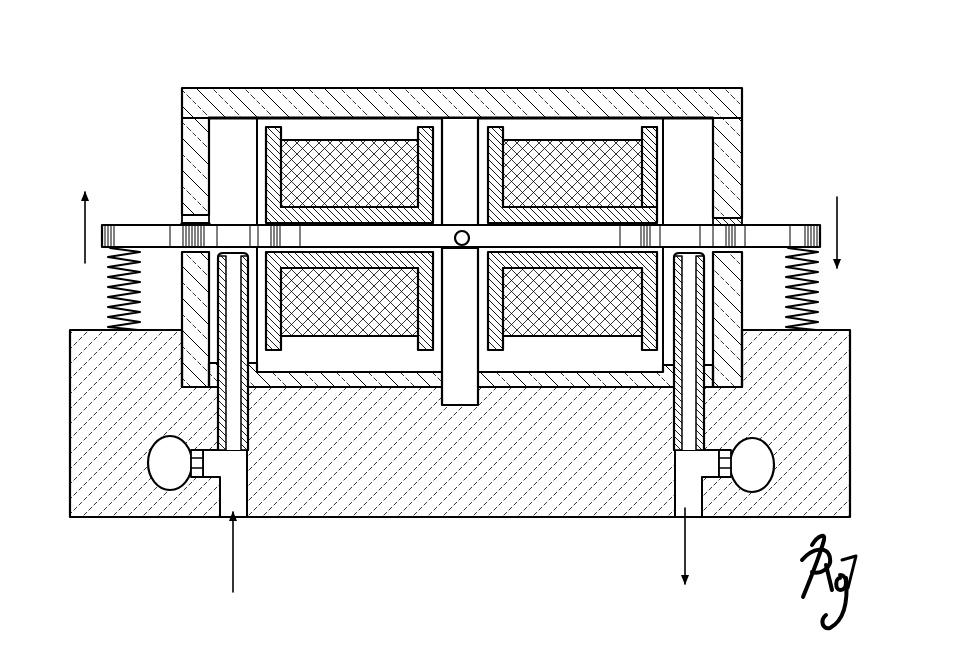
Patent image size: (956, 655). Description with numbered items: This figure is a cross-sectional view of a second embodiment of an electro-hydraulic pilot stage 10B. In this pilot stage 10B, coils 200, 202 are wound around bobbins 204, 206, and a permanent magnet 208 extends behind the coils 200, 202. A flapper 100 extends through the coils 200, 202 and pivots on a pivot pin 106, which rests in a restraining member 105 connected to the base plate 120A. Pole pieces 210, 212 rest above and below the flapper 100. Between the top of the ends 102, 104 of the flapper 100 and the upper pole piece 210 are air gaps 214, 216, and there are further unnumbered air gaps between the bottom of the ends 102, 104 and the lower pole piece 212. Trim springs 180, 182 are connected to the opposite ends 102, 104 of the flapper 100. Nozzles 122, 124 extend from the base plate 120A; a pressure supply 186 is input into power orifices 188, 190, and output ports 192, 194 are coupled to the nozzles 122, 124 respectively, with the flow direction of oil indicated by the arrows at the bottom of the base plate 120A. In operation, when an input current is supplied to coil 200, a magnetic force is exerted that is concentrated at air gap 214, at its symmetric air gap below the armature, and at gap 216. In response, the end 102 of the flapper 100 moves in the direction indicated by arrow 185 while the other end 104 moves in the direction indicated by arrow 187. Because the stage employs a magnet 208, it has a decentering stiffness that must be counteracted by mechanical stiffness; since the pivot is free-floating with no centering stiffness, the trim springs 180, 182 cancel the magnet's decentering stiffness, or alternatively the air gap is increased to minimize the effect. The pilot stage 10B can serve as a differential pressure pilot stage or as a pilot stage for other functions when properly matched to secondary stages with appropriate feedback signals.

The pilot stage 10B is at (500, 202).
The pole piece 210 is at (202, 87).
The air gap 214 is at (182, 221).
The flapper 100 is at (148, 224).
The end of flapper 102 is at (113, 225).
The end of flapper 104 is at (810, 242).
The pivot pin 106 is at (462, 230).
The restraining member 105 is at (457, 396).
The nozzle 122 is at (223, 256).
The nozzle 124 is at (697, 255).
The trim spring 180 is at (110, 312).
The trim spring 182 is at (813, 273).
The arrow 185 is at (85, 195).
The arrow 187 is at (837, 200).
The pressure supply 186 is at (200, 478).
The power orifice 188 is at (167, 480).
The power orifice 190 is at (726, 478).
The output port 192 is at (242, 502).
The output port 194 is at (668, 518).
The base plate 120A is at (385, 520).
The coil 200 is at (385, 148).
The coil 202 is at (577, 147).
The bobbin 204 is at (275, 135).
The bobbin 206 is at (650, 133).
The permanent magnet 208 is at (607, 130).
The pole piece 212 is at (733, 358).
The air gap 216 is at (735, 225).